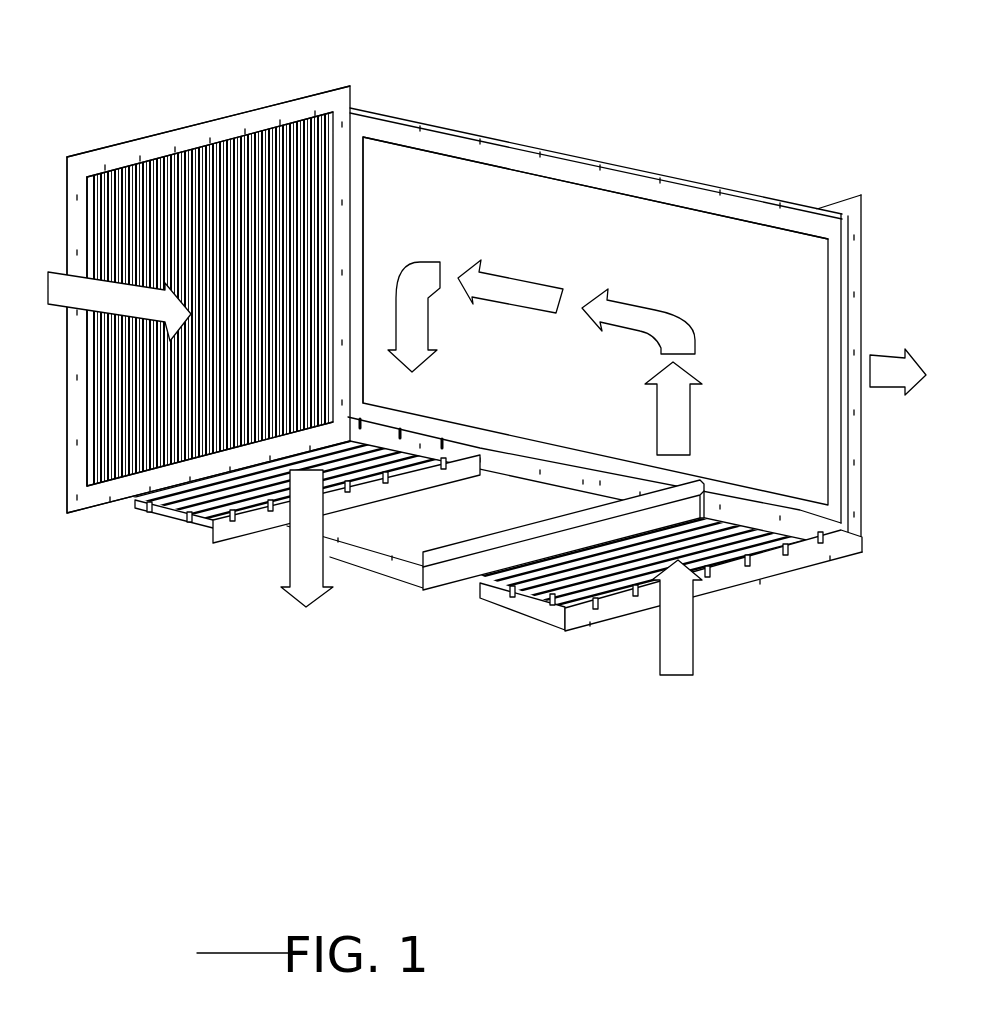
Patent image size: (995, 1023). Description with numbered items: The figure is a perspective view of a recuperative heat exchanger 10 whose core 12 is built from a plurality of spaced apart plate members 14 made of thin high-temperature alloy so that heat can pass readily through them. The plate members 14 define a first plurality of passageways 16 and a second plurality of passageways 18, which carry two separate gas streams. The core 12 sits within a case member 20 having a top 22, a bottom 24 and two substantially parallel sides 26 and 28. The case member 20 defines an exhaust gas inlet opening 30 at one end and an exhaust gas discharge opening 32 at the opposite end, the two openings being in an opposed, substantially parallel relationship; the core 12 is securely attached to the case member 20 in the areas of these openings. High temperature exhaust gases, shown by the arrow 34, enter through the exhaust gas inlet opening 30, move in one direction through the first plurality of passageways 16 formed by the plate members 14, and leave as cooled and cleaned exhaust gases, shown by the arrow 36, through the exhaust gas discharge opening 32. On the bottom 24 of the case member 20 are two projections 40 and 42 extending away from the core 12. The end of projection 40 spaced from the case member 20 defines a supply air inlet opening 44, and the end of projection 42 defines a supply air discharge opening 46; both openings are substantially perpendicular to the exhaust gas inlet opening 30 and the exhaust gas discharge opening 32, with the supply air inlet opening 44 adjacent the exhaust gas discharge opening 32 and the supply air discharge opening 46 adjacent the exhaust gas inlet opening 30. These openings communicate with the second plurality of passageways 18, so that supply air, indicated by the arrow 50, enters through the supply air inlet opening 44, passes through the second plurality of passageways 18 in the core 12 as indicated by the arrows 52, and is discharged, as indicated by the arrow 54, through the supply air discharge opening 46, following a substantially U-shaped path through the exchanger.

The recuperative heat exchanger 10 is at (437, 90).
The core 12 is at (132, 180).
The plate members 14 is at (95, 407).
The first plurality of passageways 16 is at (87, 377).
The second plurality of passageways 18 is at (177, 502).
The case member 20 is at (522, 143).
The top 22 is at (637, 170).
The bottom 24 is at (387, 527).
The side 26 is at (560, 368).
The side 28 is at (66, 178).
The exhaust gas inlet opening 30 is at (67, 468).
The exhaust gas discharge opening 32 is at (863, 478).
The arrow 34 is at (62, 298).
The arrow 36 is at (885, 352).
The projection 40 is at (483, 585).
The projection 42 is at (233, 540).
The supply air inlet opening 44 is at (573, 583).
The supply air discharge opening 46 is at (172, 524).
The arrow 50 is at (675, 677).
The arrows 52 is at (690, 420).
The arrow 54 is at (300, 605).